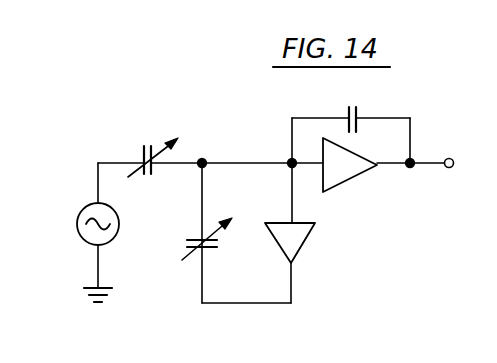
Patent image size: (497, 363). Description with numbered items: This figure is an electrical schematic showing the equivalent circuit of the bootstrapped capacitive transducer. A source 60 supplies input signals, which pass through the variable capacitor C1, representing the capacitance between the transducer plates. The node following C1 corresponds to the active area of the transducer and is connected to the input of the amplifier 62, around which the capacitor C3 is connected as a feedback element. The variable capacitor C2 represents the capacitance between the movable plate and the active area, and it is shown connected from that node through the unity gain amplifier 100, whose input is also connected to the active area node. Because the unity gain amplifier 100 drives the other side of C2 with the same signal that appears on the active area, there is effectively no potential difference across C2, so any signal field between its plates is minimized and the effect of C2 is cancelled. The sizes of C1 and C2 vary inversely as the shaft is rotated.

The source 60 is at (90, 242).
The variable capacitor C1 is at (143, 150).
The variable capacitor C2 is at (197, 237).
The capacitor C3 is at (357, 112).
The amplifier 62 is at (341, 183).
The unity gain amplifier 100 is at (300, 243).